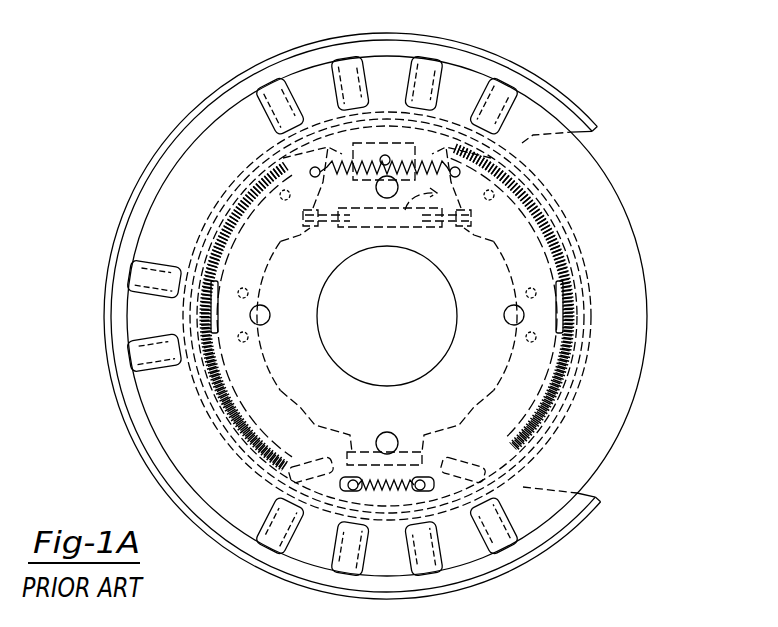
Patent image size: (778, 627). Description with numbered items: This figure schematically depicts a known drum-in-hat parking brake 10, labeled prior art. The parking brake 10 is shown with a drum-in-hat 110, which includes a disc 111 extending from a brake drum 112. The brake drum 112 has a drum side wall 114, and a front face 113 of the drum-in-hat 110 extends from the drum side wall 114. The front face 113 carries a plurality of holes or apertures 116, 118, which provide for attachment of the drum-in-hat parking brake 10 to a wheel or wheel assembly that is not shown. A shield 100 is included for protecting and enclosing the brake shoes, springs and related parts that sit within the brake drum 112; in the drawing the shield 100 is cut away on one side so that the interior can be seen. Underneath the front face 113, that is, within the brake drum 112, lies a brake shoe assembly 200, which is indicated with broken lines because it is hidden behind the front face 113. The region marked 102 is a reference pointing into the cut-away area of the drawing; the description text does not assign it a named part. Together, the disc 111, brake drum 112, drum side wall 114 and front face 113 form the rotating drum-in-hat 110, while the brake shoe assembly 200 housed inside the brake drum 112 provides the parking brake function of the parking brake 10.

The drum-in-hat parking brake 10 is at (607, 43).
The shield 100 is at (452, 33).
The drum cutaway opening 102 is at (623, 125).
The drum-in-hat 110 is at (623, 197).
The disc 111 is at (633, 342).
The brake drum 112 is at (553, 187).
The front face 113 is at (530, 277).
The drum side wall 114 is at (577, 394).
The hole 116 is at (318, 313).
The hole 118 is at (270, 313).
The brake shoe assembly 200 is at (233, 408).